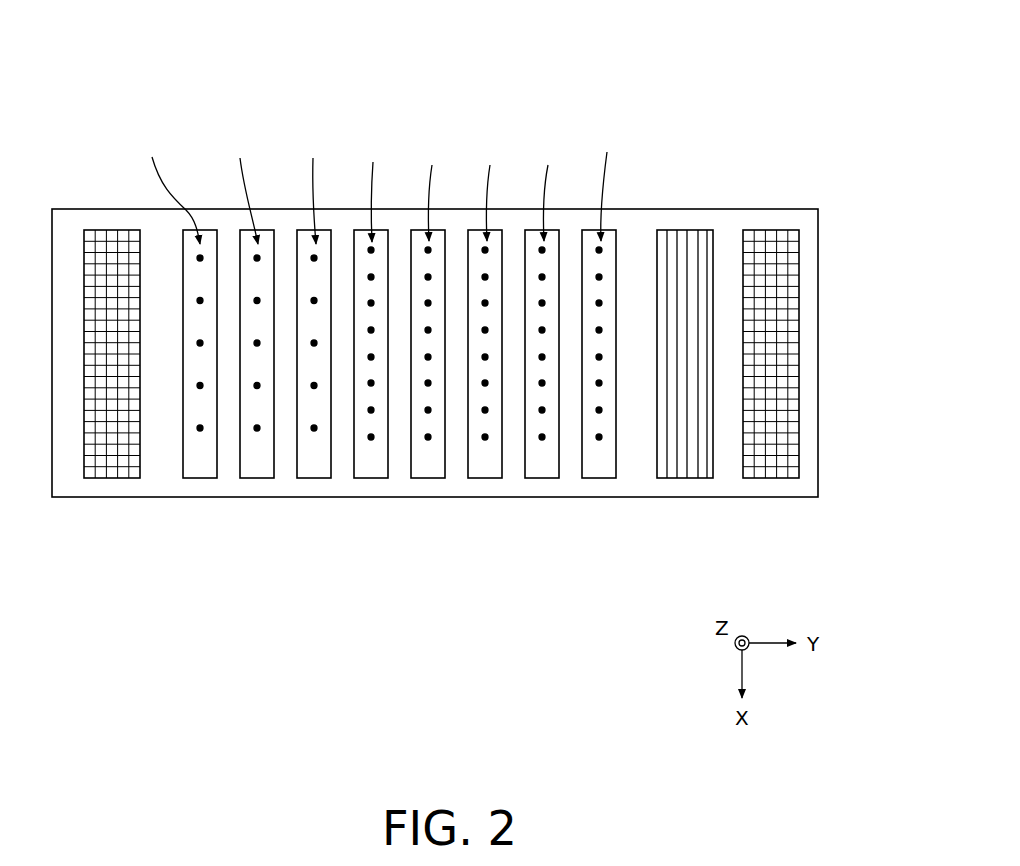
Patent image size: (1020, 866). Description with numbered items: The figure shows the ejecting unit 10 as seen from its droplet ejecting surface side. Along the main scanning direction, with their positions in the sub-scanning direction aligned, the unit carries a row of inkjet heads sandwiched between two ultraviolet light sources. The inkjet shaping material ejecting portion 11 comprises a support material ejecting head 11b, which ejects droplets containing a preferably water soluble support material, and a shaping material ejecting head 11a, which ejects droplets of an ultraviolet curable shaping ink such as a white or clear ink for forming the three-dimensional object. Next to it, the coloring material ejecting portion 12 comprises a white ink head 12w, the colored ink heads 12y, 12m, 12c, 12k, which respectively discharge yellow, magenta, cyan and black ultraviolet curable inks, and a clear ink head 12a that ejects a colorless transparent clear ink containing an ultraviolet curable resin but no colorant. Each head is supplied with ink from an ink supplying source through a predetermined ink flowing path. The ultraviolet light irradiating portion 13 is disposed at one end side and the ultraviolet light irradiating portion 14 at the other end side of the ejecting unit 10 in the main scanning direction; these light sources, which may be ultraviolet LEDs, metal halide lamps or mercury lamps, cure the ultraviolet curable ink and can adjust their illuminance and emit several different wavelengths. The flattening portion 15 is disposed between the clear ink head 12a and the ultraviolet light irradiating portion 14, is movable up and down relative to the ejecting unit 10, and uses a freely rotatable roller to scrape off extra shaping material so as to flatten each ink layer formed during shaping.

The ejecting unit 10 is at (673, 57).
The inkjet shaping material ejecting portion 11 is at (216, 415).
The shaping material ejecting head 11a is at (257, 478).
The support material ejecting head 11b is at (200, 478).
The coloring material ejecting portion 12 is at (448, 416).
The white ink head 12w is at (314, 478).
The colored ink head 12y is at (371, 478).
The colored ink head 12m is at (428, 478).
The colored ink head 12c is at (485, 478).
The colored ink head 12k is at (542, 478).
The clear ink head 12a is at (592, 397).
The ultraviolet light irradiating portion 13 is at (113, 478).
The ultraviolet light irradiating portion 14 is at (772, 478).
The flattening portion 15 is at (685, 230).